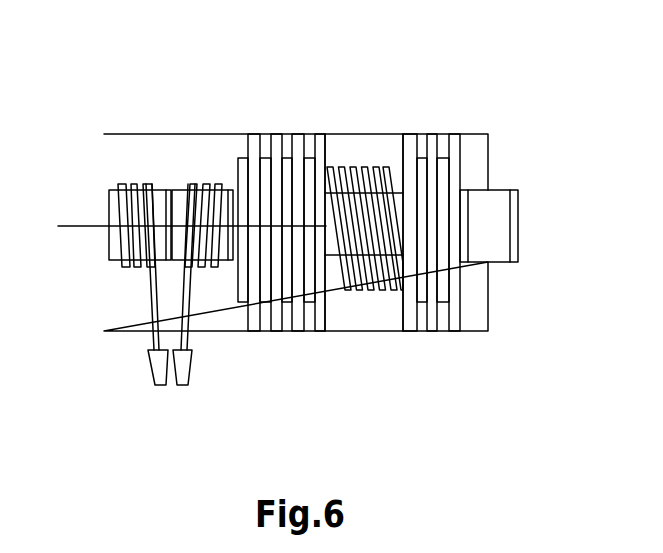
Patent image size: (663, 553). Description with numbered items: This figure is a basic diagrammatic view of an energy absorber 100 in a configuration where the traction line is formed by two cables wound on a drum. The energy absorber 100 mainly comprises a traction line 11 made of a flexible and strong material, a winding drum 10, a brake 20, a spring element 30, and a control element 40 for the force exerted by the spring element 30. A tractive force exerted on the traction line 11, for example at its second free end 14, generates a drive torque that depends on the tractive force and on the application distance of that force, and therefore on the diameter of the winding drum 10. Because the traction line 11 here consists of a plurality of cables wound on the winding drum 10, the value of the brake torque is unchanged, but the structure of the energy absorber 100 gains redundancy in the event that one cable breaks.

The energy absorber 100 is at (412, 125).
The winding drum 10 is at (155, 182).
The traction line 11 is at (150, 303).
The second free end 14 is at (158, 363).
The brake 20 is at (288, 305).
The spring element 30 is at (369, 302).
The control element 40 is at (513, 268).